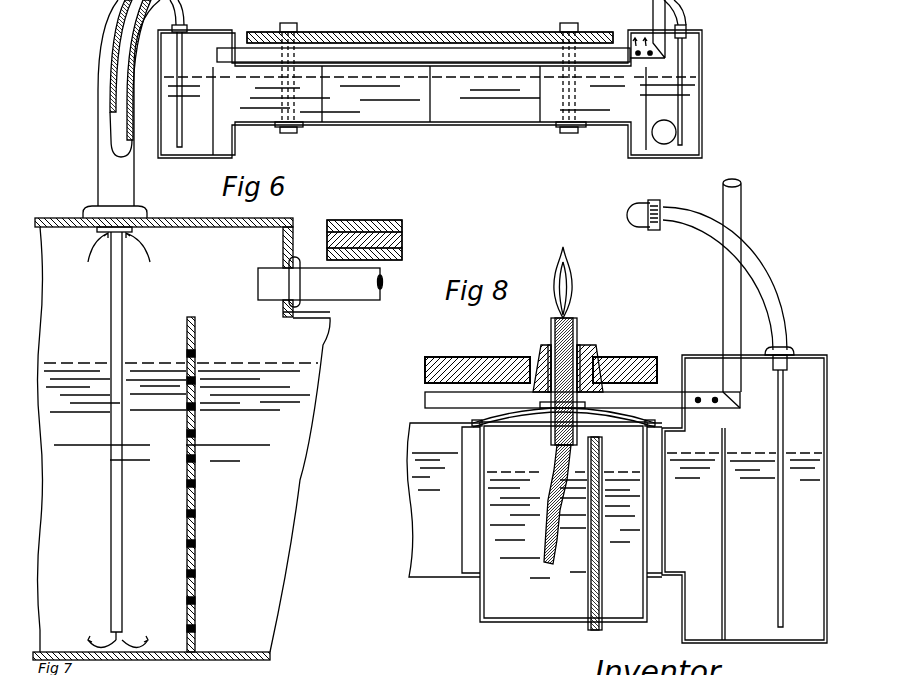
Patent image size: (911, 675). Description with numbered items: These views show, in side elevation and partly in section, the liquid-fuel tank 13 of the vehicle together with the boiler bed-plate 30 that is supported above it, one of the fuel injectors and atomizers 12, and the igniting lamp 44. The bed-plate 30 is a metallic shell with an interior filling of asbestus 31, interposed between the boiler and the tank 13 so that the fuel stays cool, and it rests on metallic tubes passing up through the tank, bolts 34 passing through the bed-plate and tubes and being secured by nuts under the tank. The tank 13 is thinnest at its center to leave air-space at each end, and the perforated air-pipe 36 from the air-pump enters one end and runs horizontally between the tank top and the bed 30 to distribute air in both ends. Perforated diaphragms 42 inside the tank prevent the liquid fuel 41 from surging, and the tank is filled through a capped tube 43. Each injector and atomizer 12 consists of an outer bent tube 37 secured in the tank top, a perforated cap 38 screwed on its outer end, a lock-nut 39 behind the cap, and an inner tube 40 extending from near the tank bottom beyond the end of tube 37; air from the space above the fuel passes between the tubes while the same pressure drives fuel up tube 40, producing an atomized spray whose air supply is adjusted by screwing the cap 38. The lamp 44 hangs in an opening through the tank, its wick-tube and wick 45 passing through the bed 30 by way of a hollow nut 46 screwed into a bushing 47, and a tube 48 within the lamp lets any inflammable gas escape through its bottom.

In FIG. 6, the liquid-fuel injector and atomizer 12 is at (192, 4).
In FIG. 8, the liquid-fuel injector and atomizer 12 is at (732, 281).
In FIG. 6, the fuel tank 13 is at (451, 122).
In FIG. 7, the fuel tank 13 is at (181, 439).
In FIG. 8, the fuel tank 13 is at (617, 499).
In FIG. 6, the bed-plate 30 is at (430, 28).
In FIG. 7, the bed-plate 30 is at (364, 230).
In FIG. 8, the bed-plate 30 is at (457, 358).
In FIG. 6, the asbestus filling 31 is at (368, 33).
In FIG. 7, the asbestus filling 31 is at (403, 238).
In FIG. 8, the asbestus filling 31 is at (425, 368).
In FIG. 6, the bolts 34 is at (290, 133).
In FIG. 6, the air-pipe 36 is at (653, 14).
In FIG. 7, the air-pipe 36 is at (320, 282).
In FIG. 8, the air-pipe 36 is at (425, 398).
In FIG. 7, the outer bent tube 37 is at (121, 109).
In FIG. 8, the cap 38 is at (636, 228).
In FIG. 8, the lock-nut 39 is at (653, 233).
In FIG. 6, the inner tube 40 is at (184, 131).
In FIG. 7, the inner tube 40 is at (110, 318).
In FIG. 8, the inner tube 40 is at (781, 418).
In FIG. 6, the liquid fuel 41 is at (207, 48).
In FIG. 7, the liquid fuel 41 is at (181, 414).
In FIG. 8, the liquid fuel 41 is at (617, 515).
In FIG. 6, the perforated diaphragms 42 is at (686, 68).
In FIG. 7, the perforated diaphragms 42 is at (187, 332).
In FIG. 8, the perforated diaphragms 42 is at (721, 435).
In FIG. 6, the capped tube 43 is at (664, 132).
In FIG. 8, the lamp 44 is at (482, 612).
In FIG. 8, the wick-tube and wick 45 is at (552, 325).
In FIG. 8, the collar 46 is at (578, 348).
In FIG. 8, the bushing 47 is at (604, 348).
In FIG. 8, the gas-escape tube 48 is at (602, 457).